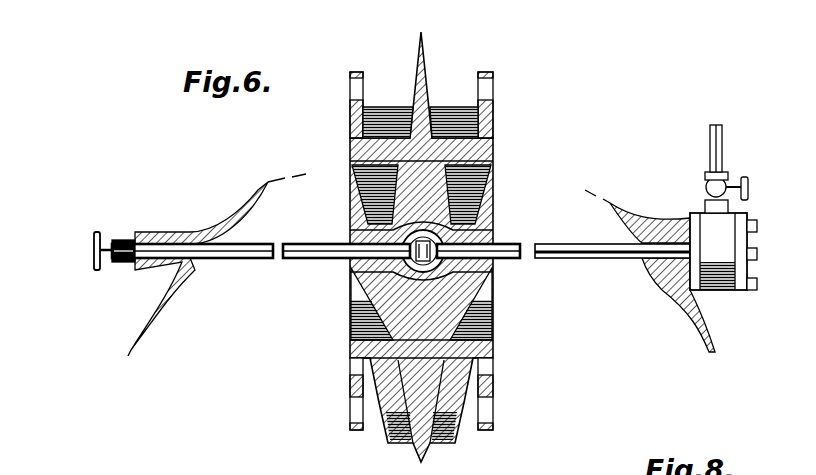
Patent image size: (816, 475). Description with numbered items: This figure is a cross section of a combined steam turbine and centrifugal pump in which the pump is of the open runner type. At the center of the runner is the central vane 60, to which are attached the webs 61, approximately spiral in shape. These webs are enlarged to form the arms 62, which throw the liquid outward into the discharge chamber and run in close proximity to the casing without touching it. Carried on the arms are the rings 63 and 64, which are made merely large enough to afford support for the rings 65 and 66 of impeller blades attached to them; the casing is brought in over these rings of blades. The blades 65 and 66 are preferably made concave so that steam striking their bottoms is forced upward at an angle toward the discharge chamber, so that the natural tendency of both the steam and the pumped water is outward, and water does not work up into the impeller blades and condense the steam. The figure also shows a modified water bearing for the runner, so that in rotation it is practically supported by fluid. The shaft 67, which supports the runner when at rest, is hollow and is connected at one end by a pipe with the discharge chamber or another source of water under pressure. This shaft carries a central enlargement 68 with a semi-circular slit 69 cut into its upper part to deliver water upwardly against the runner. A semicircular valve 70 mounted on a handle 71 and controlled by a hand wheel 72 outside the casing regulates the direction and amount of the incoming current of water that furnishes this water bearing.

The central vane 60 is at (428, 47).
The webs 61 is at (356, 222).
The arms 62 is at (350, 152).
The ring 63 is at (494, 115).
The ring 64 is at (352, 118).
The ring of impeller blades 65 is at (494, 84).
The ring of impeller blades 66 is at (350, 80).
The shaft 67 is at (581, 259).
The central enlargement 68 is at (486, 274).
The semi-circular slit 69 is at (352, 228).
The semicircular valve 70 is at (370, 272).
The handle 71 is at (244, 259).
The hand wheel 72 is at (100, 270).